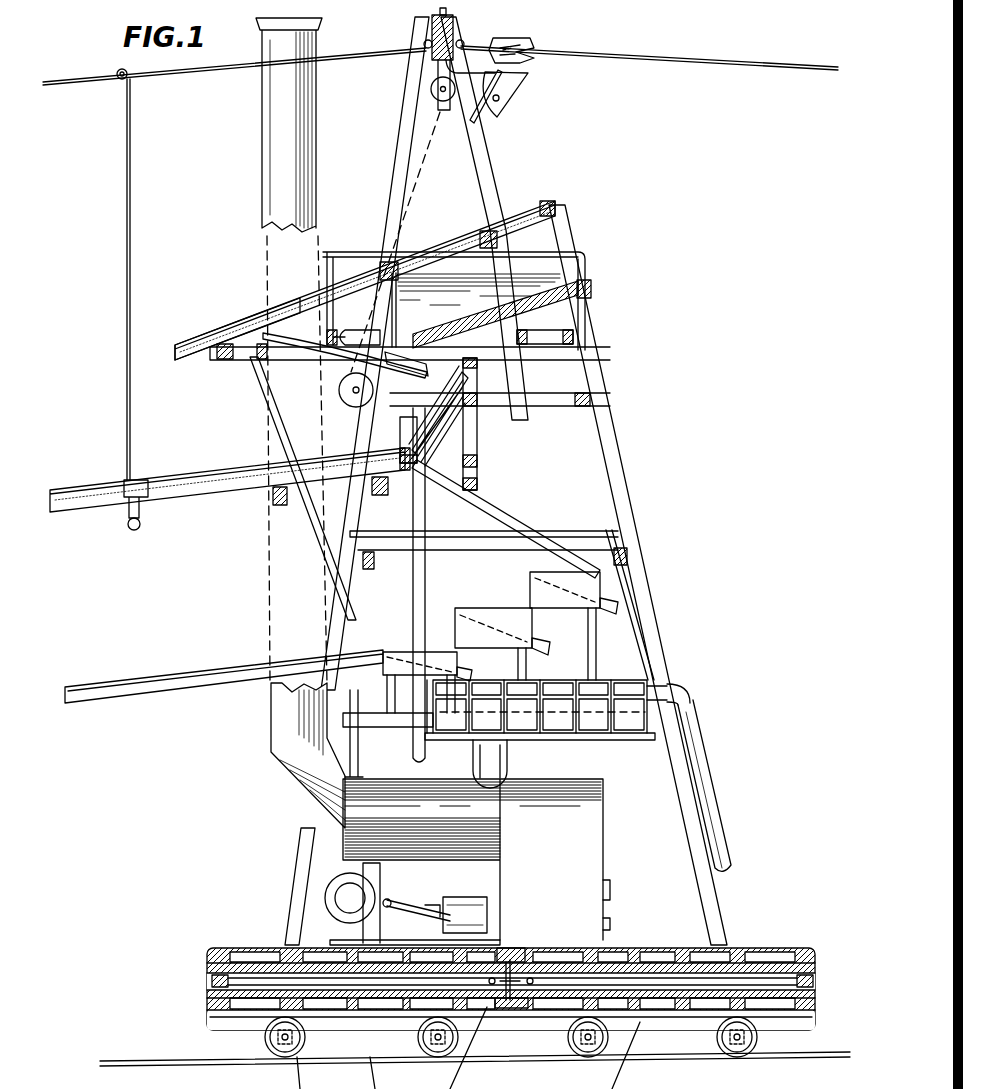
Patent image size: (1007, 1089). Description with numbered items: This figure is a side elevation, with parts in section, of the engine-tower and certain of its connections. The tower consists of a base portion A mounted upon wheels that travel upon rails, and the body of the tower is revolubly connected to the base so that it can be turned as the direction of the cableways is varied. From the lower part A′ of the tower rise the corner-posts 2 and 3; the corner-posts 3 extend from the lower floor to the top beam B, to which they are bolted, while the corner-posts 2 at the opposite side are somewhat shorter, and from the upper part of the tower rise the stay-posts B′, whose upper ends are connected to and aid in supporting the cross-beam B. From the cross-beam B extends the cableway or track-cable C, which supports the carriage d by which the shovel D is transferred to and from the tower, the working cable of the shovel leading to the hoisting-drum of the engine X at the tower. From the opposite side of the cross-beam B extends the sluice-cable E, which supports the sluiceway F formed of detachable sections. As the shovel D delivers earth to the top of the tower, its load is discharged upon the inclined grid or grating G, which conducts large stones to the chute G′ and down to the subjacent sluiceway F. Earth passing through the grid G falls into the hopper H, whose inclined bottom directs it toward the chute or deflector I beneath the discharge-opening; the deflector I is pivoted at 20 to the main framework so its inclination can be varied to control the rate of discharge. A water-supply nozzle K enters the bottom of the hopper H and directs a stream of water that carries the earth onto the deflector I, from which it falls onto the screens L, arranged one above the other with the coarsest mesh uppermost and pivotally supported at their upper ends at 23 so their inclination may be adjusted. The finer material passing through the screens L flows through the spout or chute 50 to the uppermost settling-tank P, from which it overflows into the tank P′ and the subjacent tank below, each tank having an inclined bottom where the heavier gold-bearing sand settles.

The base portion A is at (618, 1055).
The lower part of the tower A′ is at (660, 940).
The top beam B is at (430, 22).
The stay-posts B′ is at (485, 176).
The cableway or track-cable C is at (645, 62).
The carriage d is at (520, 38).
The shovel D is at (512, 95).
The sluice-cable E is at (170, 75).
The rope m is at (132, 200).
The hook M is at (126, 522).
The inclined grid or grating G is at (510, 222).
The chute G′ is at (195, 345).
The hopper H is at (470, 322).
The chute or deflector I is at (380, 363).
The pivot 20 is at (385, 345).
The water-supply nozzle K is at (363, 347).
The screens L is at (418, 366).
The pivotal support 23 is at (468, 384).
The corner-posts 2 is at (610, 442).
The spout or chute 50 is at (500, 512).
The sluiceway F is at (200, 500).
The settling-tank P is at (574, 626).
The settling-tank P′ is at (502, 644).
The corner-posts 3 is at (300, 876).
The engine X is at (455, 897).